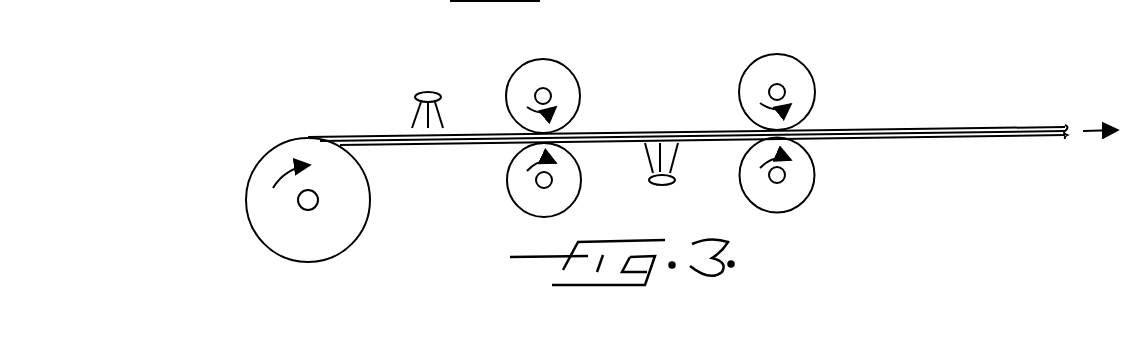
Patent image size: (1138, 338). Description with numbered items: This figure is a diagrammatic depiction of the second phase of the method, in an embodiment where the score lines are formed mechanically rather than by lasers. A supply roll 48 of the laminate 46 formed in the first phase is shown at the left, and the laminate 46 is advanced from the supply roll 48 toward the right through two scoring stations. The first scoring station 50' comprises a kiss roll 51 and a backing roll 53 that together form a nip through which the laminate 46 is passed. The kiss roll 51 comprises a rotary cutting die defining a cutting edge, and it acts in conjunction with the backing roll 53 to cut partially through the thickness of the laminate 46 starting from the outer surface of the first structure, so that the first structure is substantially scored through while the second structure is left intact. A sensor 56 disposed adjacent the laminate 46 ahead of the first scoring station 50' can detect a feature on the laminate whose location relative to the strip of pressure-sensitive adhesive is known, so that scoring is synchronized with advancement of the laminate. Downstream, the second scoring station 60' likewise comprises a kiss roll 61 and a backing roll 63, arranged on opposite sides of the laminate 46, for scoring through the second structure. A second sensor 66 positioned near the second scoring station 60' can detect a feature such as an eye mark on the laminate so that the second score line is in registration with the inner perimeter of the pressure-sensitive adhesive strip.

The laminate 46 is at (365, 125).
The supply roll 48 is at (255, 209).
The sensor 56 is at (428, 91).
The first scoring station 50' is at (550, 126).
The kiss roll 51 is at (570, 91).
The backing roll 53 is at (523, 203).
The sensor 66 is at (662, 187).
The second scoring station 60' is at (822, 125).
The backing roll 63 is at (810, 91).
The kiss roll 61 is at (803, 186).